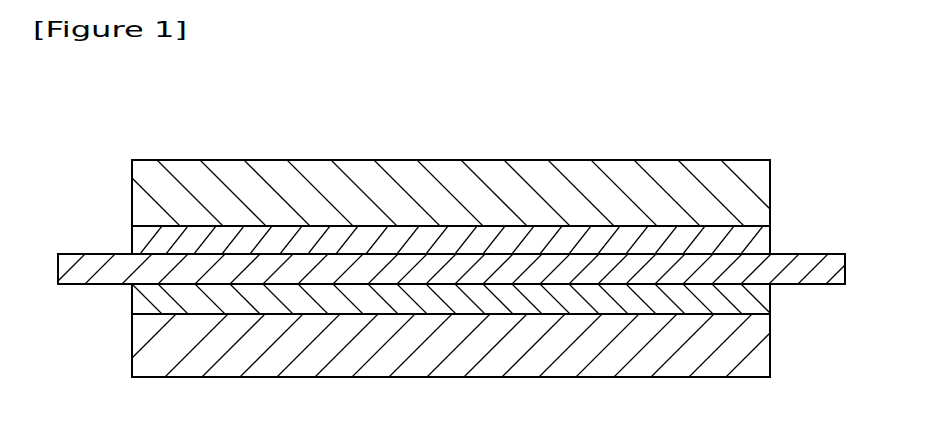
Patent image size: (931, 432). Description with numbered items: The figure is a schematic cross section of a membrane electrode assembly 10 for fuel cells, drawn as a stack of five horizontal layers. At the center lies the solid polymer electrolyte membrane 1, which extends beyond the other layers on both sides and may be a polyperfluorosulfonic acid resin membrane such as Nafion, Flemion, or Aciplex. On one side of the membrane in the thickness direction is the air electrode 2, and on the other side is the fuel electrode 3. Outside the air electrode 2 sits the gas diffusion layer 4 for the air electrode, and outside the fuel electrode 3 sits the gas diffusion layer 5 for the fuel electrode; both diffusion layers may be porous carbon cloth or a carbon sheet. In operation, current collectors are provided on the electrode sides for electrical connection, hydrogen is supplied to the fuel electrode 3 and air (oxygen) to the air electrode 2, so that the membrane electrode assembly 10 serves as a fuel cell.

The membrane electrode assembly 10 is at (470, 240).
The solid polymer electrolyte membrane 1 is at (82, 267).
The air electrode 2 is at (762, 240).
The fuel electrode 3 is at (763, 298).
The gas diffusion layer for the air electrode 4 is at (762, 184).
The gas diffusion layer for the fuel electrode 5 is at (762, 350).